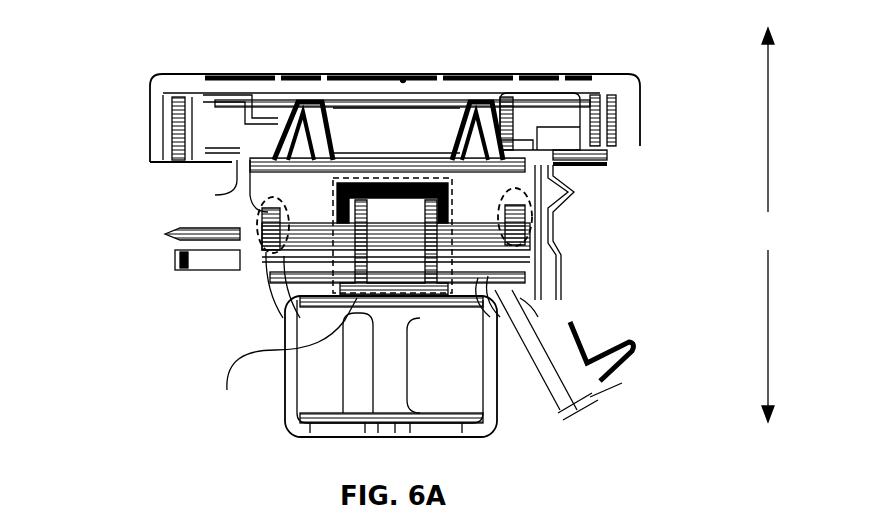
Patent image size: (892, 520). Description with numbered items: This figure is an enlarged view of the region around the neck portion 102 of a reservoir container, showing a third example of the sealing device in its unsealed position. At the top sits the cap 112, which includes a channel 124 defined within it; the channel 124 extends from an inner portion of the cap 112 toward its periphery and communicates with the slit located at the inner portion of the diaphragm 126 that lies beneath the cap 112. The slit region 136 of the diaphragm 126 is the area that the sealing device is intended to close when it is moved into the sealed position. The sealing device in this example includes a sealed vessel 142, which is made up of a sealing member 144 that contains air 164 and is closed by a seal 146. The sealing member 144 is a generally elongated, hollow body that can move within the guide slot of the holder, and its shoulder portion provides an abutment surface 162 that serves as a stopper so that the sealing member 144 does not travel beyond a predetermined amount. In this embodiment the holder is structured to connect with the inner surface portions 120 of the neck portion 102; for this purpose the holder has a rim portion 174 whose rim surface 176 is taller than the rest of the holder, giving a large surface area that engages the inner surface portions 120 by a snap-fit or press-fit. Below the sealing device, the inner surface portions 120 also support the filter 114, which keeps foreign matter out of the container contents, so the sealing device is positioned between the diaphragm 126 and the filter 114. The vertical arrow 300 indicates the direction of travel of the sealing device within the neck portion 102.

The neck portion 102 is at (160, 282).
The cap 112 is at (641, 78).
The filter 114 is at (455, 420).
The inner surface portions 120 is at (260, 233).
The channel 124 is at (403, 78).
The diaphragm 126 is at (300, 130).
The slit region 136 is at (520, 161).
The sealed vessel 142 is at (281, 358).
The sealing member 144 is at (440, 257).
The seal 146 is at (336, 203).
The abutment surface 162 is at (360, 290).
The air 164 is at (412, 245).
The rim portion 174 is at (260, 213).
The rim surface 176 is at (520, 230).
The vertical direction 300 is at (766, 225).